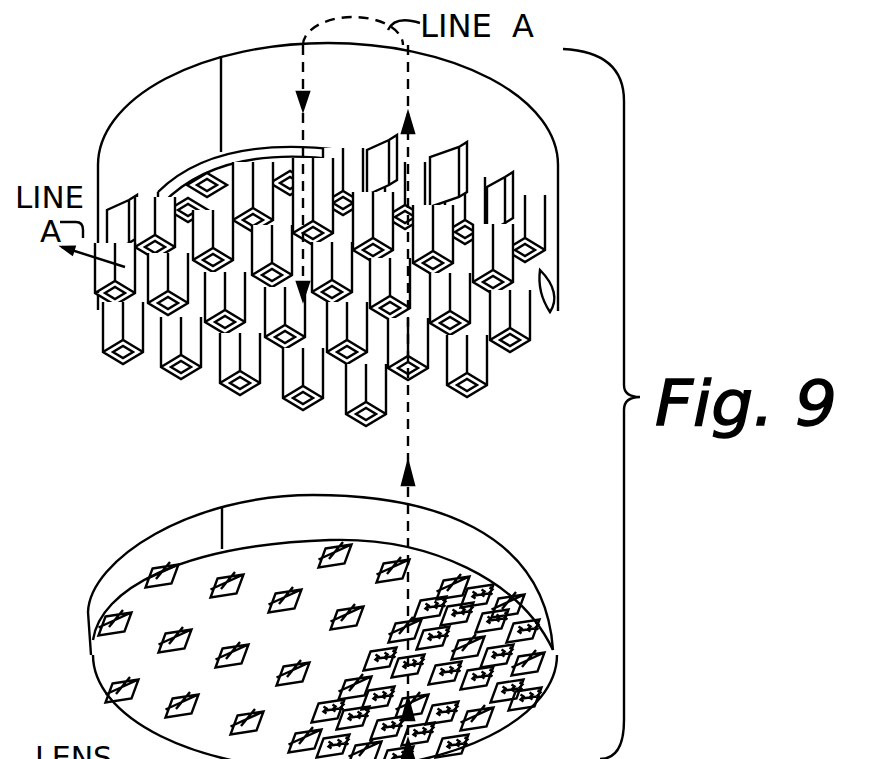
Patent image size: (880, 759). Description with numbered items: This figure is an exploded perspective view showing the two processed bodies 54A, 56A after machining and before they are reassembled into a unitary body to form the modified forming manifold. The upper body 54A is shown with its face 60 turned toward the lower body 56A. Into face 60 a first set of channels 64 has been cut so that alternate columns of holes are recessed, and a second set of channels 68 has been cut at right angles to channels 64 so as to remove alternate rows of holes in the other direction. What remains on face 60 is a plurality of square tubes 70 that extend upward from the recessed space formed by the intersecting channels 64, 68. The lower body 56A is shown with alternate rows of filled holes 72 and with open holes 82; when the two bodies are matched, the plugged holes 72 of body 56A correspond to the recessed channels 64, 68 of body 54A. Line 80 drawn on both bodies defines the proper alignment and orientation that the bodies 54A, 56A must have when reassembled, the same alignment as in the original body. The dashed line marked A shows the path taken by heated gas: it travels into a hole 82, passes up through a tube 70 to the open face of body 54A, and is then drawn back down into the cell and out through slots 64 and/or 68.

The body 54A is at (503, 133).
The body 56A is at (513, 552).
The face 60 is at (307, 266).
The channels 64 is at (381, 152).
The channels 68 is at (122, 205).
The square tubes 70 is at (466, 198).
The filled holes 72 is at (533, 698).
The line 80 is at (219, 128).
The hole 82 is at (182, 705).